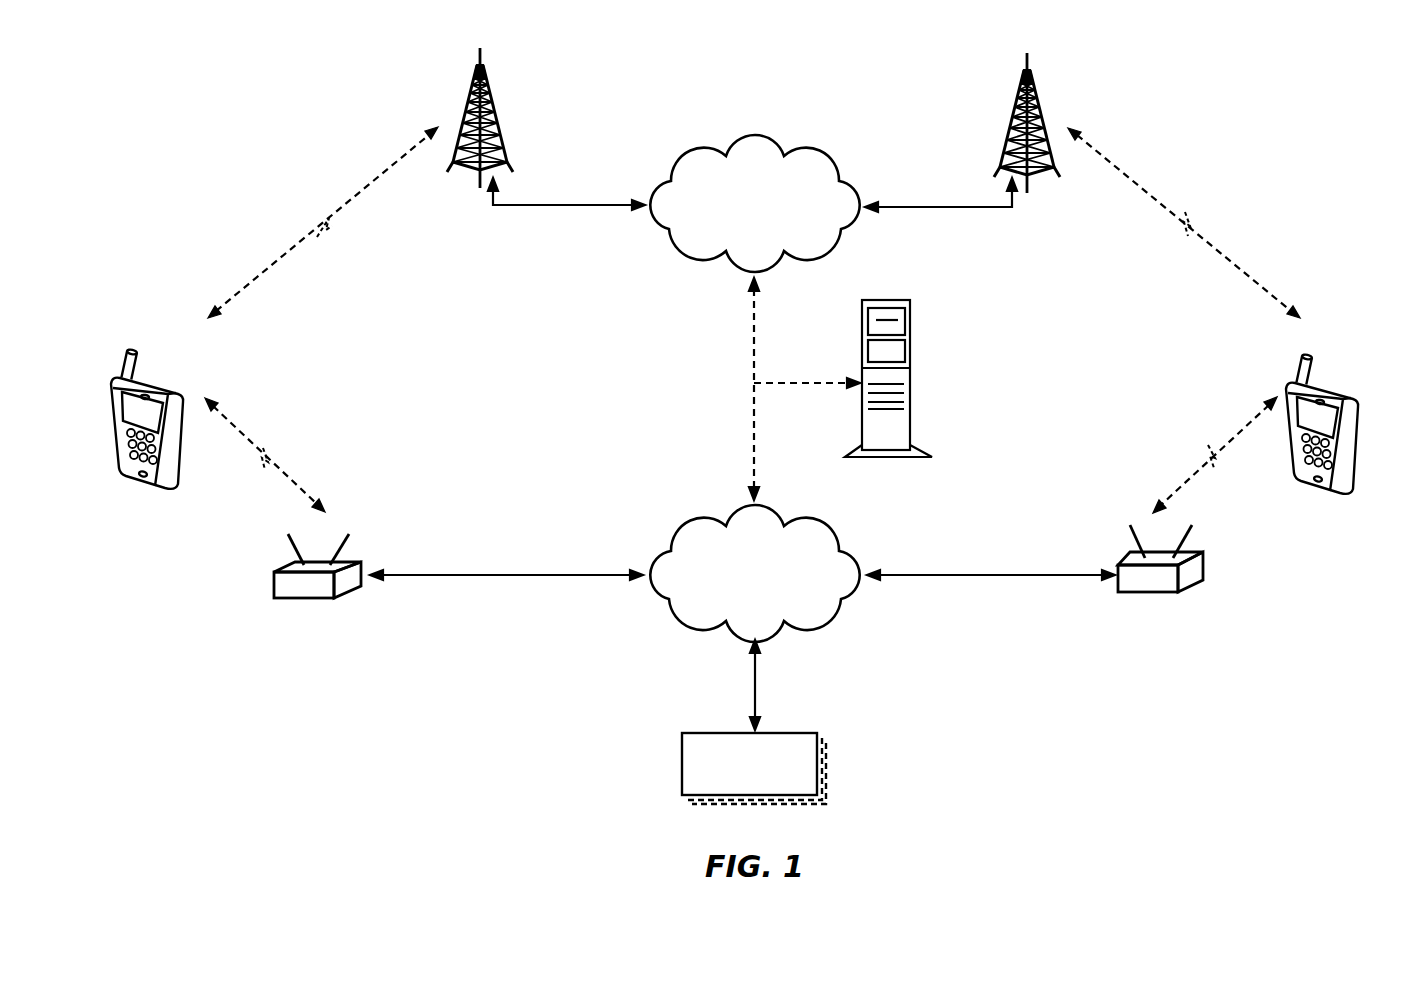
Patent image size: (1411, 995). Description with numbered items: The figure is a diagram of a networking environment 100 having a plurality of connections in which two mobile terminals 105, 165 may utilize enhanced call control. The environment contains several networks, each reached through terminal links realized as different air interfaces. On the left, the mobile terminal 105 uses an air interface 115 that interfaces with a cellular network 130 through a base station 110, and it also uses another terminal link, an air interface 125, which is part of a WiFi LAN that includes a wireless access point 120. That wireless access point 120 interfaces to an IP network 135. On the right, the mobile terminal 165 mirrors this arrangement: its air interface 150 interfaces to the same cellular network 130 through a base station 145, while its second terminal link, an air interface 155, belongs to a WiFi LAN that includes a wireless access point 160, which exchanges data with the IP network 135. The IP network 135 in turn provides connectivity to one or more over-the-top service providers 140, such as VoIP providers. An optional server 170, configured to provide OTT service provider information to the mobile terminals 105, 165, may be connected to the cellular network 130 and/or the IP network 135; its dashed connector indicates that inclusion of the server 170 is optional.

The networking environment 100 is at (170, 129).
The mobile terminal 105 is at (160, 487).
The base station 110 is at (488, 100).
The air interface 115 is at (338, 217).
The wireless access point 120 is at (315, 598).
The air interface 125 is at (276, 455).
The cellular network 130 is at (757, 134).
The IP network 135 is at (680, 625).
The OTT service providers 140 is at (682, 760).
The base station 145 is at (1033, 88).
The air interface 150 is at (1196, 222).
The air interface 155 is at (1200, 458).
The wireless access point 160 is at (1163, 592).
The mobile terminal 165 is at (1332, 500).
The server 170 is at (888, 300).